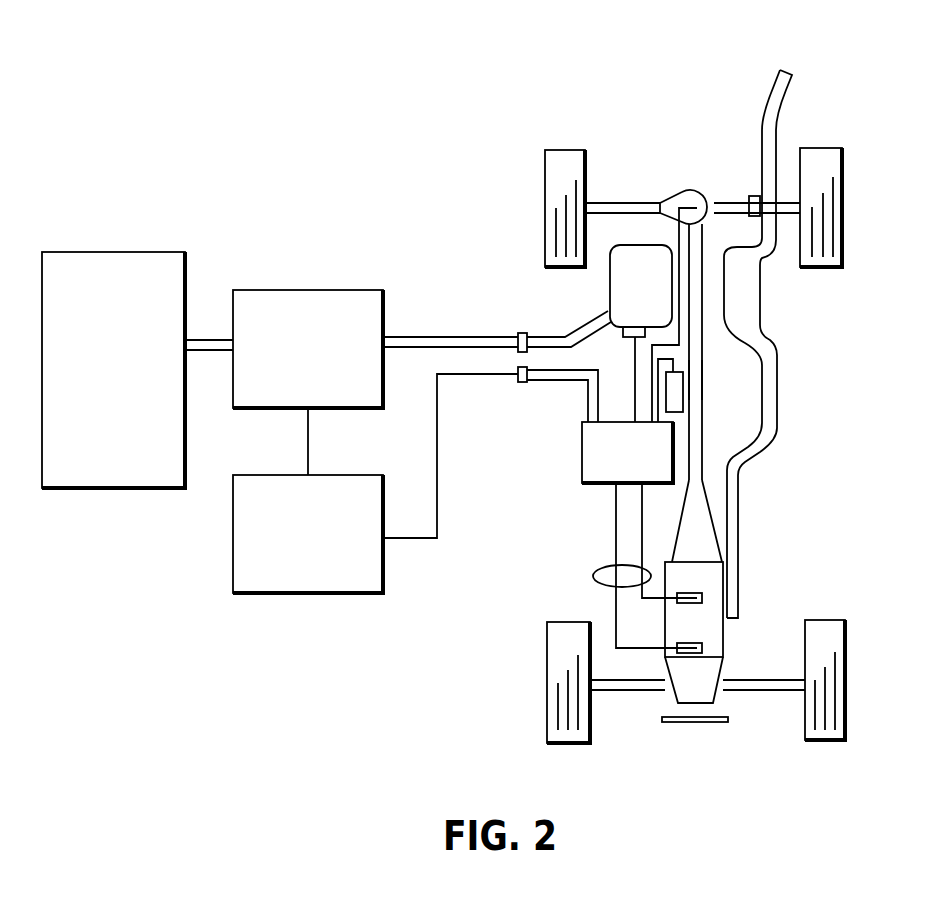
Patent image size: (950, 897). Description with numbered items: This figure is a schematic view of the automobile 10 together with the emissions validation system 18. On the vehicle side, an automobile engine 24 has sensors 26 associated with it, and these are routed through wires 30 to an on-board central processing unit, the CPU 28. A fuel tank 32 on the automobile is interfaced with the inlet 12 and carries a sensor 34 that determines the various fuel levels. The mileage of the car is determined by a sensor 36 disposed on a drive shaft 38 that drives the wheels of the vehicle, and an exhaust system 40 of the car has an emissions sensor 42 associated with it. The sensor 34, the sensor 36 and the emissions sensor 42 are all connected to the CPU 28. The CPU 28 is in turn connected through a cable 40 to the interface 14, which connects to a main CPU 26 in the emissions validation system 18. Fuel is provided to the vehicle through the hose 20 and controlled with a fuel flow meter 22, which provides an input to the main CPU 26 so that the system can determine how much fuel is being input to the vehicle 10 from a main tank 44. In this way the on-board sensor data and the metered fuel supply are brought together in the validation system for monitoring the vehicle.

The automobile 10 is at (870, 96).
The inlet 12 is at (512, 338).
The interface 14 is at (523, 382).
The emissions validation system 18 is at (142, 198).
The hose 20 is at (453, 345).
The fuel flow meter 22 is at (308, 294).
The automobile engine 24 is at (698, 680).
The sensors / main CPU 26 is at (296, 582).
The central processing unit (CPU) 28 is at (603, 478).
The wires 30 is at (593, 578).
The fuel tank 32 is at (645, 267).
The sensor 34 is at (623, 334).
The sensor 36 is at (673, 398).
The drive shaft 38 is at (697, 373).
The exhaust system / cable 40 is at (590, 397).
The emissions sensor 42 is at (758, 205).
The main tank 44 is at (103, 470).